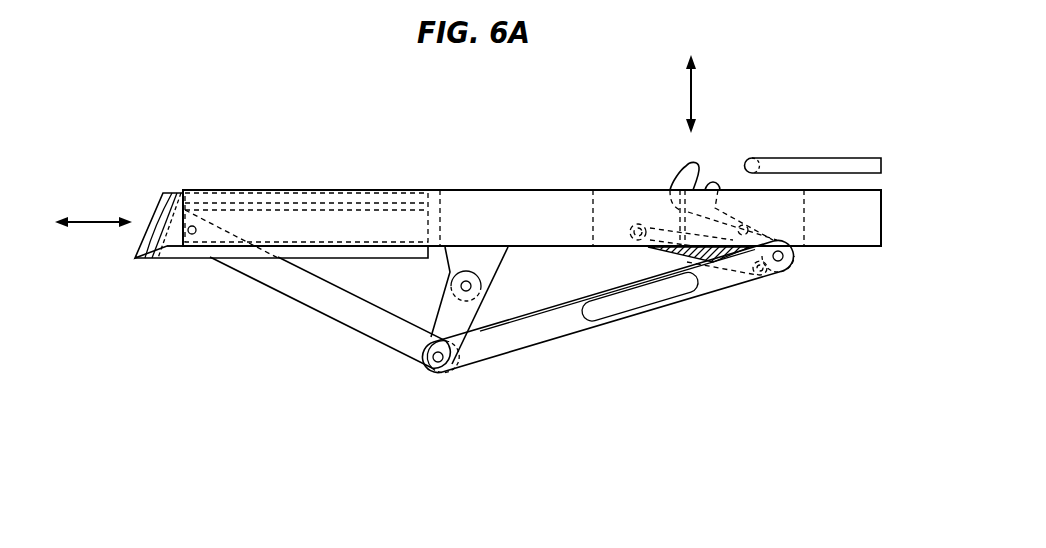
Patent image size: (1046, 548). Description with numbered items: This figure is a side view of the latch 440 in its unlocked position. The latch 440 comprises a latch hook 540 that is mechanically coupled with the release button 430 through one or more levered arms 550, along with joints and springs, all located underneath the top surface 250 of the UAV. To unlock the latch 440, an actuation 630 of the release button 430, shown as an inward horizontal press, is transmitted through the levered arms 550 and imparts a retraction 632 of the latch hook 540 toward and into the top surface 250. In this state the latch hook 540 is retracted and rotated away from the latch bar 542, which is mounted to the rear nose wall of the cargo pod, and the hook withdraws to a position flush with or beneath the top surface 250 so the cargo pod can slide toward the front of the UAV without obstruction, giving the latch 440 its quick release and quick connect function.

The top surface 250 is at (521, 183).
The release button 430 is at (158, 202).
The latch 440 is at (525, 330).
The latch hook 540 is at (678, 182).
The latch bar 542 is at (837, 167).
The levered arms 550 is at (345, 318).
The actuation 630 is at (83, 224).
The retraction 632 is at (691, 93).